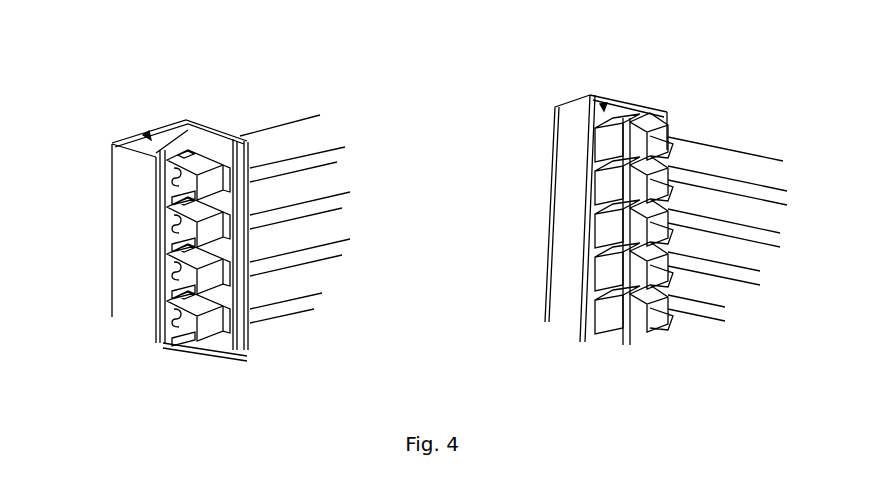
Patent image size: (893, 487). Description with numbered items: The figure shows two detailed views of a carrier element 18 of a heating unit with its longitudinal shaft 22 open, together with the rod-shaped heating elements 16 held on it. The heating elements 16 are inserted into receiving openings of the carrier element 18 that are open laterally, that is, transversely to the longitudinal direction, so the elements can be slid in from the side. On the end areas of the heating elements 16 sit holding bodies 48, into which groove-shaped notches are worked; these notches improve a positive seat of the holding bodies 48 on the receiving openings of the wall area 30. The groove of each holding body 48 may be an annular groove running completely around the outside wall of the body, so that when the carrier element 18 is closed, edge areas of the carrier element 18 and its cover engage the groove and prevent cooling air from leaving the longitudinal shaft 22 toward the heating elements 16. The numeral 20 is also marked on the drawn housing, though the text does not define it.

The heating elements 16 is at (323, 235).
The carrier element 18 is at (130, 239).
The connector housing 20 is at (180, 119).
The longitudinal shaft 22 is at (140, 134).
The wall area 30 is at (219, 128).
The holding bodies 48 is at (163, 305).